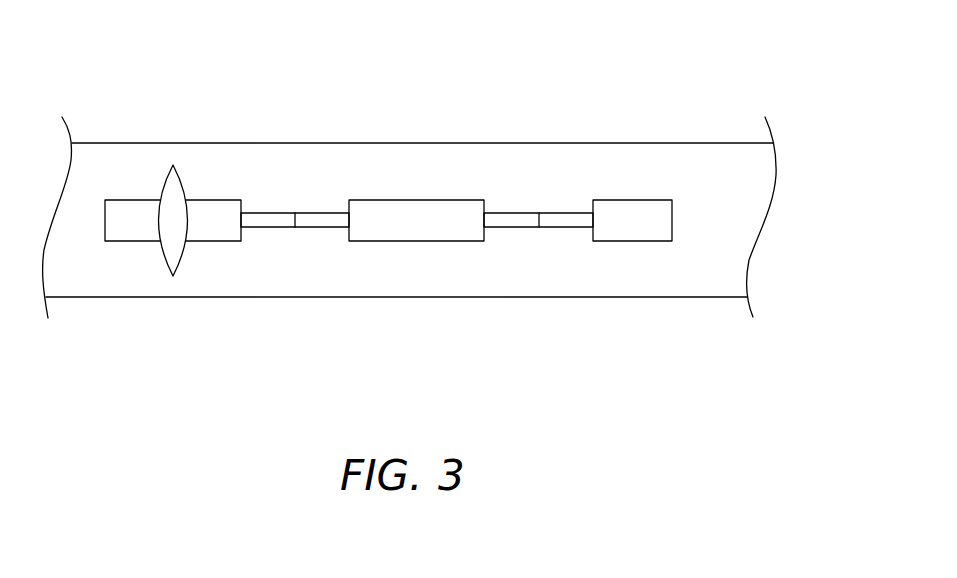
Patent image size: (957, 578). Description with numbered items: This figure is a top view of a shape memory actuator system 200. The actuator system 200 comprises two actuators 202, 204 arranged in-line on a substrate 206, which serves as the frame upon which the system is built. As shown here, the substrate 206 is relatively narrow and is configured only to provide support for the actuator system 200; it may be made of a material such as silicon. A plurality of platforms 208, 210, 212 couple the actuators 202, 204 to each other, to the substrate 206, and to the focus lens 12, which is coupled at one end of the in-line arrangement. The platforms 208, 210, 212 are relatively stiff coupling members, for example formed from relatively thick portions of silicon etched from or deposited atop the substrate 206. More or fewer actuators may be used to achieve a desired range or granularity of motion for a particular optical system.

The actuator system 200 is at (506, 80).
The substrate 206 is at (310, 275).
The platform 212 is at (213, 198).
The focus lens 12 is at (173, 166).
The actuator 204 is at (310, 213).
The platform 210 is at (458, 200).
The actuator 202 is at (553, 213).
The platform 208 is at (652, 200).